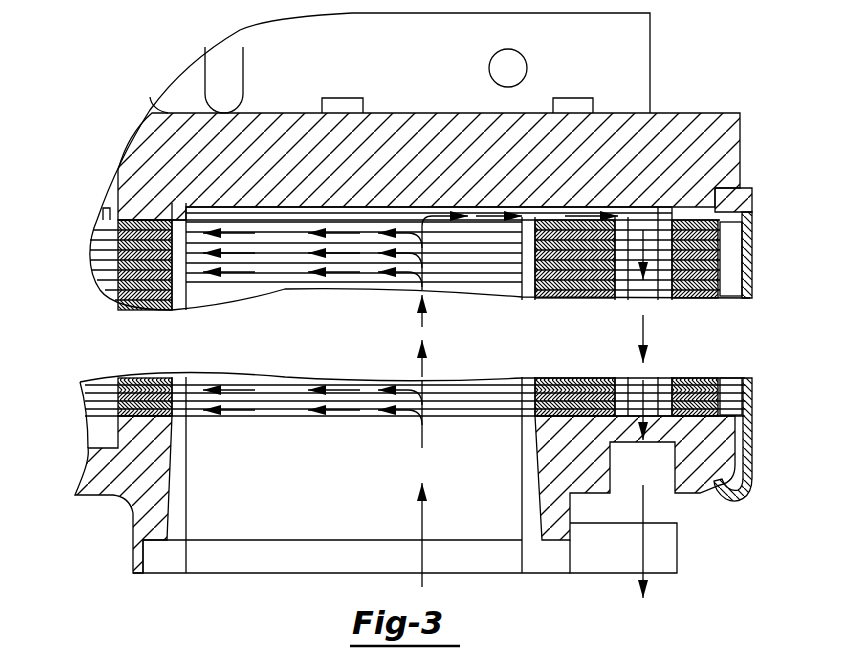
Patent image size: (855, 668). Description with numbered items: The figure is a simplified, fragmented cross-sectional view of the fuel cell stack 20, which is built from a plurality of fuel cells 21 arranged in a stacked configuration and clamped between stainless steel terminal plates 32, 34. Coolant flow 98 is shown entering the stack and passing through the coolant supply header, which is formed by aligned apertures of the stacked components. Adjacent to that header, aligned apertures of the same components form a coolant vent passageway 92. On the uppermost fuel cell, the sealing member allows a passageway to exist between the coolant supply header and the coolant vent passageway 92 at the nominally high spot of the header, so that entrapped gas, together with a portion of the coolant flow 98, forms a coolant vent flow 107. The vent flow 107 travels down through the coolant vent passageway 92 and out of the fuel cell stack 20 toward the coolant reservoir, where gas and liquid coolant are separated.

The fuel cell stack 20 is at (84, 74).
The fuel cells 21 is at (95, 381).
The terminal plate 32 is at (140, 512).
The terminal plate 34 is at (142, 157).
The coolant vent passageway 92 is at (658, 290).
The coolant flow 98 is at (418, 516).
The coolant vent flow 107 is at (592, 213).